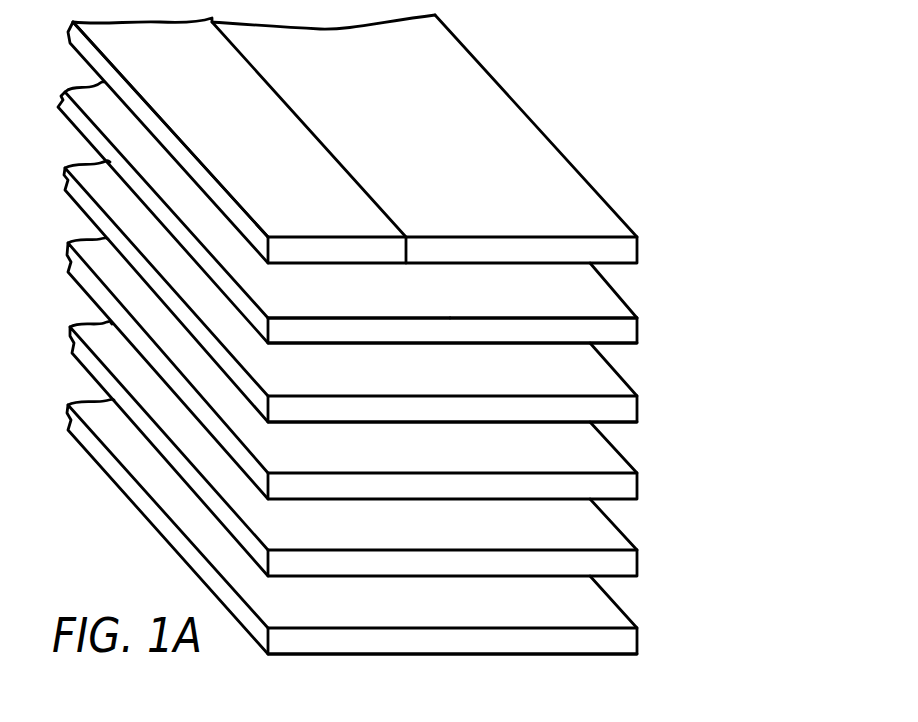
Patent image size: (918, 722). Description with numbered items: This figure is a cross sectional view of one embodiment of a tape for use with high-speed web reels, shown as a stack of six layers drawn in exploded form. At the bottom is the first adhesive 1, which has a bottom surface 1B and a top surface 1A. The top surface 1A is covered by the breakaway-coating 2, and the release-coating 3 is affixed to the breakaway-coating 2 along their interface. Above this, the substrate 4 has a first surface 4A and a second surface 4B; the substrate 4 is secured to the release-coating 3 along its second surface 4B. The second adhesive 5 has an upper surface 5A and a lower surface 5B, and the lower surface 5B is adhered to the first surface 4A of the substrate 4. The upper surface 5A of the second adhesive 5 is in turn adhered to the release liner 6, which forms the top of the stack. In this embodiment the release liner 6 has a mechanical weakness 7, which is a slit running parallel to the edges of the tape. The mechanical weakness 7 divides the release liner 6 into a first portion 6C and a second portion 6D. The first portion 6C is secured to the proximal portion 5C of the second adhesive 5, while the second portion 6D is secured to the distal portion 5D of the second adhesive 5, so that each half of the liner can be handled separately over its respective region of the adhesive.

The first adhesive 1 is at (615, 637).
The top surface 1A is at (583, 603).
The bottom surface 1B is at (600, 652).
The breakaway-coating 2 is at (617, 560).
The release-coating 3 is at (620, 485).
The substrate 4 is at (620, 407).
The first surface 4A is at (585, 380).
The second surface 4B is at (567, 422).
The second adhesive 5 is at (622, 328).
The upper surface 5A is at (590, 300).
The lower surface 5B is at (567, 342).
The proximal portion 5C is at (359, 297).
The distal portion 5D is at (543, 297).
The release liner 6 is at (623, 253).
The first portion 6C is at (195, 129).
The second portion 6D is at (536, 126).
The mechanical weakness 7 is at (320, 140).